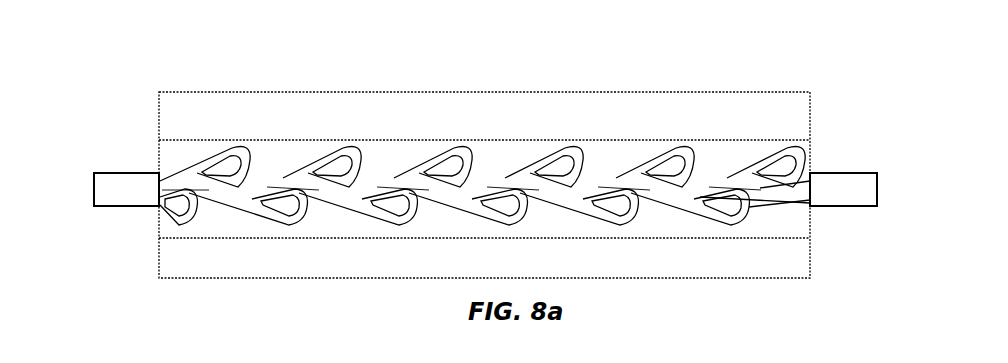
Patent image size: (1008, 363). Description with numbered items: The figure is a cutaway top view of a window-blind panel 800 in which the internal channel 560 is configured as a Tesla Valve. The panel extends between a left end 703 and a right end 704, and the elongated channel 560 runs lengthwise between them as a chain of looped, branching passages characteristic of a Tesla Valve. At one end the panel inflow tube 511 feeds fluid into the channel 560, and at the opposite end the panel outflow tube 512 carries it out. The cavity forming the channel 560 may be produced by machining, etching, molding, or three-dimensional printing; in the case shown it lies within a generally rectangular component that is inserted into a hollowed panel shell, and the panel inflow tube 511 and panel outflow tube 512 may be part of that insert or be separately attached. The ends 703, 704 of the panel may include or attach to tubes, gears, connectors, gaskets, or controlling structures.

The vessel wall / treatment region 800 is at (388, 140).
The channel 560 is at (626, 165).
The panel outflow tube 512 is at (127, 173).
The panel inflow tube 511 is at (860, 206).
The left end 703 is at (225, 270).
The right end 704 is at (762, 270).